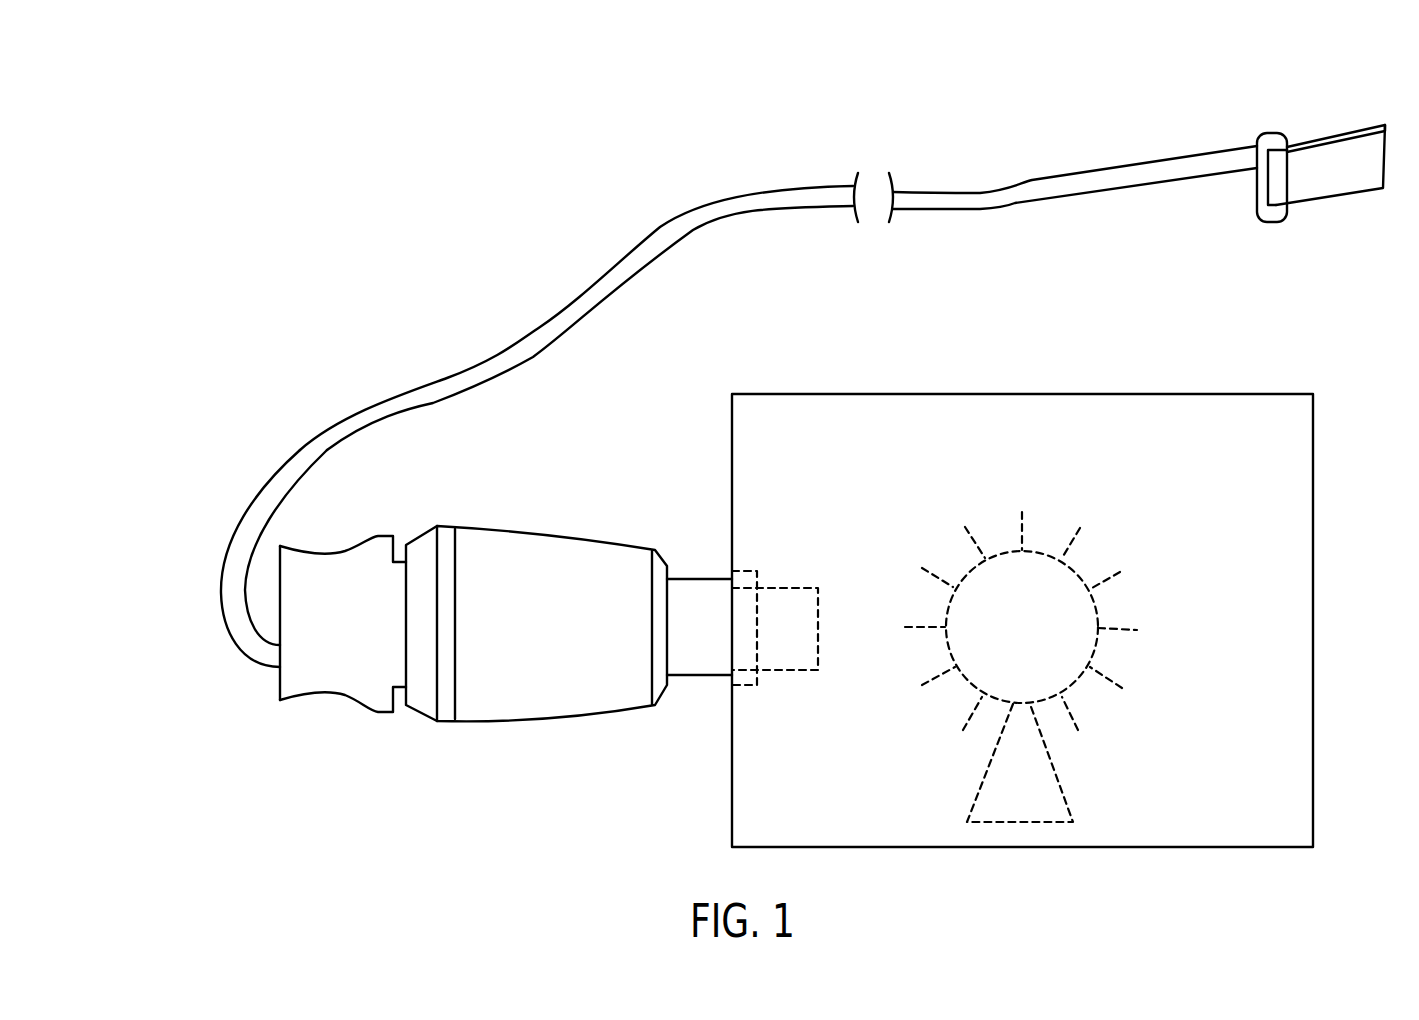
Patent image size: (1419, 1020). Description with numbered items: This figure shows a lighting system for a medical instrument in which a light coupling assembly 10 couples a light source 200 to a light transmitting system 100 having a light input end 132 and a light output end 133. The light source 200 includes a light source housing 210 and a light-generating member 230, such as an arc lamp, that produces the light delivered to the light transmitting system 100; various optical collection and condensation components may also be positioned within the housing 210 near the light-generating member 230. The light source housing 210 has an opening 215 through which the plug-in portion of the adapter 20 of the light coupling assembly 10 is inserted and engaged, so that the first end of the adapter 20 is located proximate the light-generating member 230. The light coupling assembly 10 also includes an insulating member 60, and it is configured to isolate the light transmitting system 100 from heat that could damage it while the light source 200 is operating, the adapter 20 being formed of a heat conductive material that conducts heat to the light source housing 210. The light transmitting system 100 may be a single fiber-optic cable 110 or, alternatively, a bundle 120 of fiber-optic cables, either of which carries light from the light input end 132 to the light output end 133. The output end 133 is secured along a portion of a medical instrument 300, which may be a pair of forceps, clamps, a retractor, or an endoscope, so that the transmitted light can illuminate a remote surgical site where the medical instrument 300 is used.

The light coupling assembly 10 is at (506, 698).
The adapter 20 is at (698, 671).
The insulating member 60 is at (442, 722).
The light transmitting system 100 is at (696, 429).
The fiber-optic cable 110 is at (696, 429).
The bundle 120 is at (723, 429).
The light input end 132 is at (262, 681).
The light output end 133 is at (1331, 124).
The light source 200 is at (1034, 594).
The light source housing 210 is at (1313, 720).
The opening 215 is at (728, 566).
The light-generating member 230 is at (1093, 607).
The medical instrument 300 is at (1325, 200).